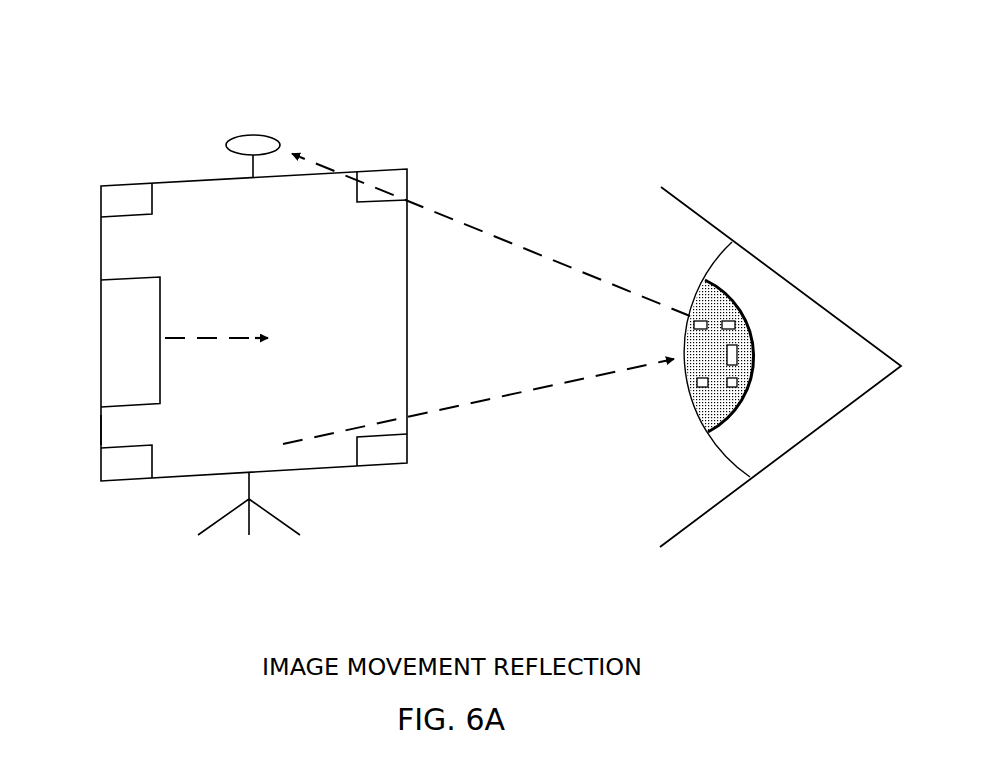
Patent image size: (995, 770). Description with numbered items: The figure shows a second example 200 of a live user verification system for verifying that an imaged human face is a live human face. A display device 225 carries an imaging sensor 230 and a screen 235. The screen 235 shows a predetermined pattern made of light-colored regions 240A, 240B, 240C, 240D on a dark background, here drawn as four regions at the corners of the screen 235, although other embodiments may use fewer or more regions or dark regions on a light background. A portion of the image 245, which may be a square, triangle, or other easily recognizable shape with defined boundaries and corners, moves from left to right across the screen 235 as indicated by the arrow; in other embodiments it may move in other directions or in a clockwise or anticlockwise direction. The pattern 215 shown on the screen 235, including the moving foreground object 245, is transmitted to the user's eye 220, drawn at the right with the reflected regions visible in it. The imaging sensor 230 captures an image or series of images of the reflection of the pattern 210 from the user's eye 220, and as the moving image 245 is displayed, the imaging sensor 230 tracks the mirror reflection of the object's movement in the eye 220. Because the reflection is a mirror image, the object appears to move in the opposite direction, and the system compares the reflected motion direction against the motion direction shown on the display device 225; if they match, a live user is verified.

The live user verification system 200 is at (727, 66).
The reflection of the pattern 210 is at (507, 242).
The pattern 215 is at (500, 397).
The user's eye 220 is at (710, 410).
The display device 225 is at (101, 255).
The imaging sensor 230 is at (253, 135).
The screen 235 is at (113, 425).
The light-colored region 240A is at (119, 197).
The light-colored region 240B is at (388, 180).
The light-colored region 240C is at (387, 457).
The light-colored region 240D is at (128, 470).
The moving foreground image 245 is at (113, 350).